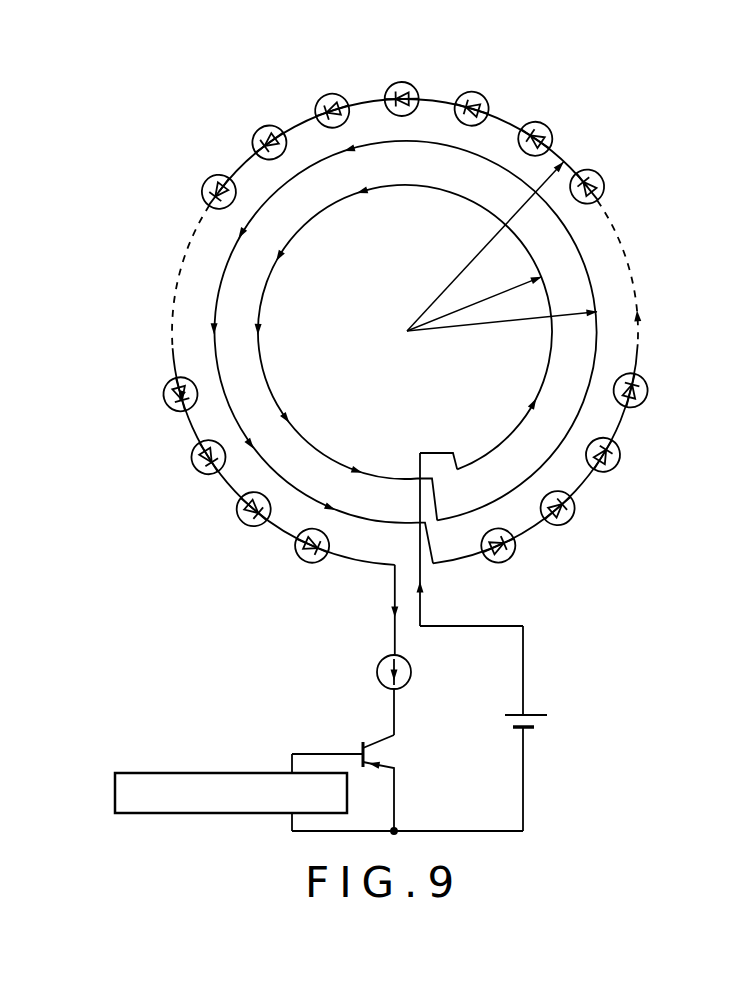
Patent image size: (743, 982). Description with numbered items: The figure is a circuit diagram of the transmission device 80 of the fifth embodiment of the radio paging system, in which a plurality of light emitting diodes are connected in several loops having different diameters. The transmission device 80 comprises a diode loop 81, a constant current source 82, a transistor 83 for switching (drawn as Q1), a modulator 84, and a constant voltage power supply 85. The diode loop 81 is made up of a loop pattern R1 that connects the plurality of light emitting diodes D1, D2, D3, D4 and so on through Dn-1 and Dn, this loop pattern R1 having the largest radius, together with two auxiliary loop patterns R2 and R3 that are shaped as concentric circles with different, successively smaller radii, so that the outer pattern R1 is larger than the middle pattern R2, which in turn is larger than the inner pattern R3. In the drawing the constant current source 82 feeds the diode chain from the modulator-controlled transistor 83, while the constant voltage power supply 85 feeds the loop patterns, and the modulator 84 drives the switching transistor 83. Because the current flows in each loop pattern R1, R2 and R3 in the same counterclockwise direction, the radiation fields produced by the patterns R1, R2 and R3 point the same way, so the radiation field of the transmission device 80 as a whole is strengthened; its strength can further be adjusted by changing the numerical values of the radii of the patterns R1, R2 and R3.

The transmission device 80 is at (583, 100).
The diode loop 81 is at (613, 206).
The constant current source 82 is at (377, 670).
The transistor 83 is at (380, 738).
The modulator 84 is at (253, 772).
The constant voltage power supply 85 is at (543, 723).
The loop pattern R1 is at (440, 100).
The auxiliary loop pattern R2 is at (320, 163).
The auxiliary loop pattern R3 is at (310, 220).
The light emitting diode D1 is at (502, 561).
The light emitting diode D2 is at (562, 521).
The light emitting diode D3 is at (611, 468).
The light emitting diode D4 is at (642, 402).
The light emitting diode Dn is at (312, 561).
The light emitting diode Dn-1 is at (244, 522).
The transistor Q1 is at (358, 783).